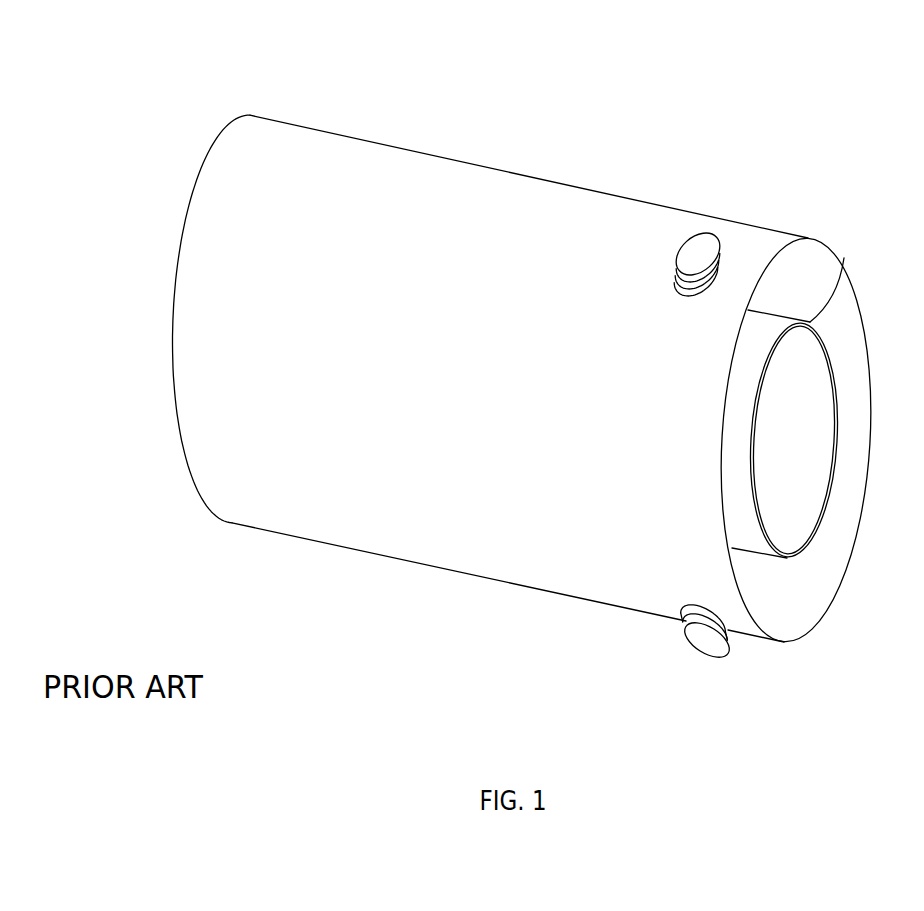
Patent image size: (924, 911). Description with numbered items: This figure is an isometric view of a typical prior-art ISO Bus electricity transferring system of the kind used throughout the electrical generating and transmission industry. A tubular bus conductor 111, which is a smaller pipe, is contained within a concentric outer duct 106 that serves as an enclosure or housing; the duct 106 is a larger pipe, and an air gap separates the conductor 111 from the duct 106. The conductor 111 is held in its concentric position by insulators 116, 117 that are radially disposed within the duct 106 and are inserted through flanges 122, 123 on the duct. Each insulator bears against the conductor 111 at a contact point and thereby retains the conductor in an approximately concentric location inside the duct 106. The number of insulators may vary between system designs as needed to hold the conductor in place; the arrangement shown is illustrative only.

The duct 106 is at (497, 167).
The bus conductor 111 is at (838, 267).
The insulator 116 is at (703, 236).
The flange 122 is at (721, 258).
The insulator 117 is at (713, 656).
The flange 123 is at (684, 614).